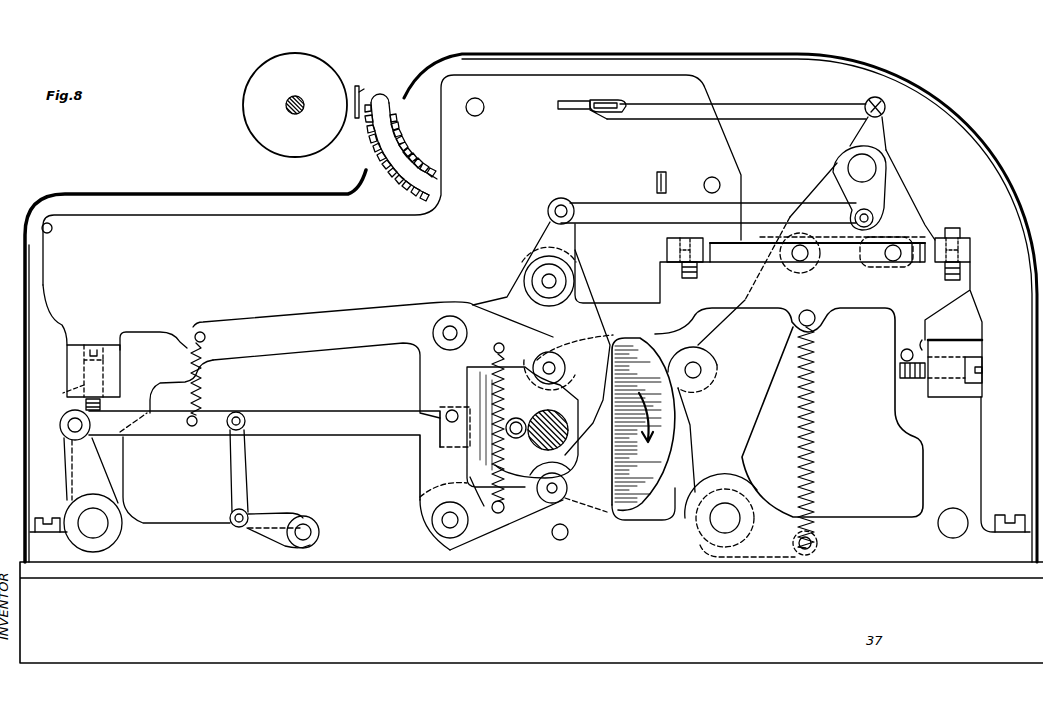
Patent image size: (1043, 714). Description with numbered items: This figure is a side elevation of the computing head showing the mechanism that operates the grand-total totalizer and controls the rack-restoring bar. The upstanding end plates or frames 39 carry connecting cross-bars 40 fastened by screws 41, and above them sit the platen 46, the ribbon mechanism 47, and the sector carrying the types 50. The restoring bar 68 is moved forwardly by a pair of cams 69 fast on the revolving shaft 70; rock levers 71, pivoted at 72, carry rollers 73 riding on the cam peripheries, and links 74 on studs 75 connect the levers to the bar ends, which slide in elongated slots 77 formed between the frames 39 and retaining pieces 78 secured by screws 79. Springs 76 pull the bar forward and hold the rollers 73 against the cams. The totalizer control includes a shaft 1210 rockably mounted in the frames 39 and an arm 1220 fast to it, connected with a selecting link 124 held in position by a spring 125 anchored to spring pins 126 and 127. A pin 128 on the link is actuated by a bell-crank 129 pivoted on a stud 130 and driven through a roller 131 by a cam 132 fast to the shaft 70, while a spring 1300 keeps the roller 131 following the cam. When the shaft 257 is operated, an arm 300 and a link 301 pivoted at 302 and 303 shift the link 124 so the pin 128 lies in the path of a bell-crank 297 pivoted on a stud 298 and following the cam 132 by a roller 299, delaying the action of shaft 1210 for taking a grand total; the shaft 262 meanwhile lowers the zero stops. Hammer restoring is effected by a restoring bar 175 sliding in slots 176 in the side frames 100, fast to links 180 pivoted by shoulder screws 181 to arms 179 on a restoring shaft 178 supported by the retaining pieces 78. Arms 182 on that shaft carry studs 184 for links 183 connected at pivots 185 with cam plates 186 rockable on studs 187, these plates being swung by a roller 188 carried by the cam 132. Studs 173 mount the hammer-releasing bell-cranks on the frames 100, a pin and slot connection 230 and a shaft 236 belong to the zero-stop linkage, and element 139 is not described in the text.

The end plate 39 is at (981, 450).
The cross-bar 40 is at (67, 372).
The screw 41 is at (992, 355).
The platen 46 is at (300, 157).
The ribbon mechanism 47 is at (364, 92).
The types 50 is at (384, 172).
The restoring bar 68 is at (905, 264).
The cam 69 is at (640, 486).
The shaft 70 is at (575, 458).
The rock lever 71 is at (748, 450).
The pivot 72 is at (740, 530).
The roller 73 is at (698, 345).
The link 74 is at (853, 262).
The stud 75 is at (803, 262).
The spring 76 is at (815, 440).
The elongated slot 77 is at (718, 263).
The retaining piece 78 is at (962, 234).
The screw 79 is at (665, 248).
The side frame 100 is at (738, 152).
The selecting link 124 is at (300, 410).
The spring 125 is at (201, 385).
The spring pin 126 is at (192, 427).
The spring pin 127 is at (206, 337).
The pin 128 is at (455, 427).
The bell-crank 129 is at (418, 380).
The stud 130 is at (458, 333).
The roller 131 is at (562, 368).
The cam 132 is at (500, 500).
The pin 139 is at (940, 527).
The stud 173 is at (705, 180).
The restoring bar 175 is at (615, 99).
The slot 176 is at (568, 93).
The restoring shaft 178 is at (876, 162).
The arm 179 is at (887, 128).
The link 180 is at (792, 102).
The shoulder screw 181 is at (886, 107).
The arm 182 is at (905, 190).
The link 183 is at (800, 199).
The stud 184 is at (875, 220).
The pivot 185 is at (572, 204).
The cam plate 186 is at (598, 282).
The stud 187 is at (540, 282).
The roller 188 is at (497, 452).
The pin and slot connection 230 is at (60, 430).
The shaft 236 is at (900, 355).
The shaft 257 is at (318, 522).
The shaft 262 is at (568, 533).
The bell-crank 297 is at (418, 490).
The stud 298 is at (460, 535).
The roller 299 is at (567, 492).
The arm 300 is at (273, 513).
The link 301 is at (249, 470).
The pivot 302 is at (246, 421).
The pivot 303 is at (231, 514).
The shaft 1210 is at (106, 530).
The arm 1220 is at (105, 478).
The spring 1300 is at (470, 522).